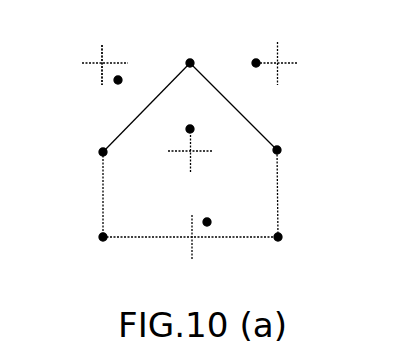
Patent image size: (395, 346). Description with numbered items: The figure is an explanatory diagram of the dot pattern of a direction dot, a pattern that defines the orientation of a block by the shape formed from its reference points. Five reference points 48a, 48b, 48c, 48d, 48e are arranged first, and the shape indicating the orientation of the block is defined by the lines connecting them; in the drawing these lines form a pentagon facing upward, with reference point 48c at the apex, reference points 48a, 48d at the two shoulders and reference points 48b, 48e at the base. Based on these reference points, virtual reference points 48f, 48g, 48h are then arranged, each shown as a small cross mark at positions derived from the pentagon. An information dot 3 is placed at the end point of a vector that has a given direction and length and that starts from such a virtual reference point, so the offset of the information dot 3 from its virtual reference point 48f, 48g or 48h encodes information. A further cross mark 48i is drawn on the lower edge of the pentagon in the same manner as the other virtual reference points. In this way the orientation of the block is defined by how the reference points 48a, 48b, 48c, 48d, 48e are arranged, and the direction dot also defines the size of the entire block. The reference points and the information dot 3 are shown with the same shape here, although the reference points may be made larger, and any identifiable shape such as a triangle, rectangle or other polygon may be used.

The information dot 3 is at (101, 78).
The reference point 48a is at (98, 148).
The reference point 48b is at (98, 240).
The reference point 48c is at (194, 59).
The reference point 48d is at (282, 147).
The reference point 48e is at (284, 240).
The virtual reference point 48f is at (101, 62).
The virtual reference point 48g is at (195, 151).
The virtual reference point 48h is at (280, 56).
The reference point 48i is at (193, 238).